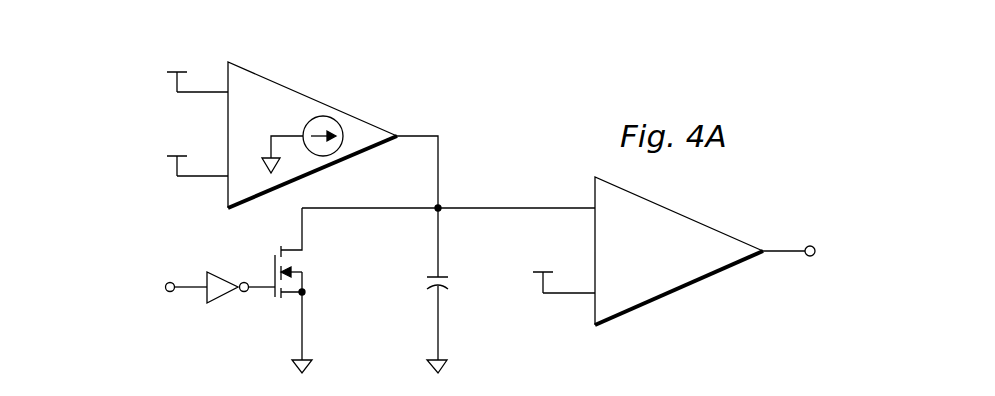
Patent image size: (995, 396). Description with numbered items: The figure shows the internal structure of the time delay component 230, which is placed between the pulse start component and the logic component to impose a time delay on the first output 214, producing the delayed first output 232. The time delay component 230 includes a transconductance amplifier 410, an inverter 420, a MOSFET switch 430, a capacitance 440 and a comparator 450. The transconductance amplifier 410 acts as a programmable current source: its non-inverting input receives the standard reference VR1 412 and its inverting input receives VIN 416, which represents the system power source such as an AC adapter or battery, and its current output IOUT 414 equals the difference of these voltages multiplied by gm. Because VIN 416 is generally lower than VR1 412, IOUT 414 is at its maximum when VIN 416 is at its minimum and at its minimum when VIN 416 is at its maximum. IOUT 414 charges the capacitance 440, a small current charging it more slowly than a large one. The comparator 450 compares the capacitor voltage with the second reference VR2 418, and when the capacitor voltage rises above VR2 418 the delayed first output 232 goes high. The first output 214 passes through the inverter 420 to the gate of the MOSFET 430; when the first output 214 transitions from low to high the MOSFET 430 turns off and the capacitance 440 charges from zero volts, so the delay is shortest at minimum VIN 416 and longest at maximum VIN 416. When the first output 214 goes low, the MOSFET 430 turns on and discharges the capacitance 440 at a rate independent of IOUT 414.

The time delay component 230 is at (524, 121).
The transconductance amplifier 410 is at (313, 93).
The VR1 412 is at (173, 80).
The VIN 416 is at (173, 164).
The IOUT 414 is at (417, 134).
The capacitance 440 is at (426, 281).
The first output 214 is at (168, 292).
The inverter 420 is at (226, 298).
The MOSFET switch 430 is at (273, 262).
The comparator 450 is at (680, 293).
The VR2 418 is at (539, 281).
The delayed first output 232 is at (812, 257).